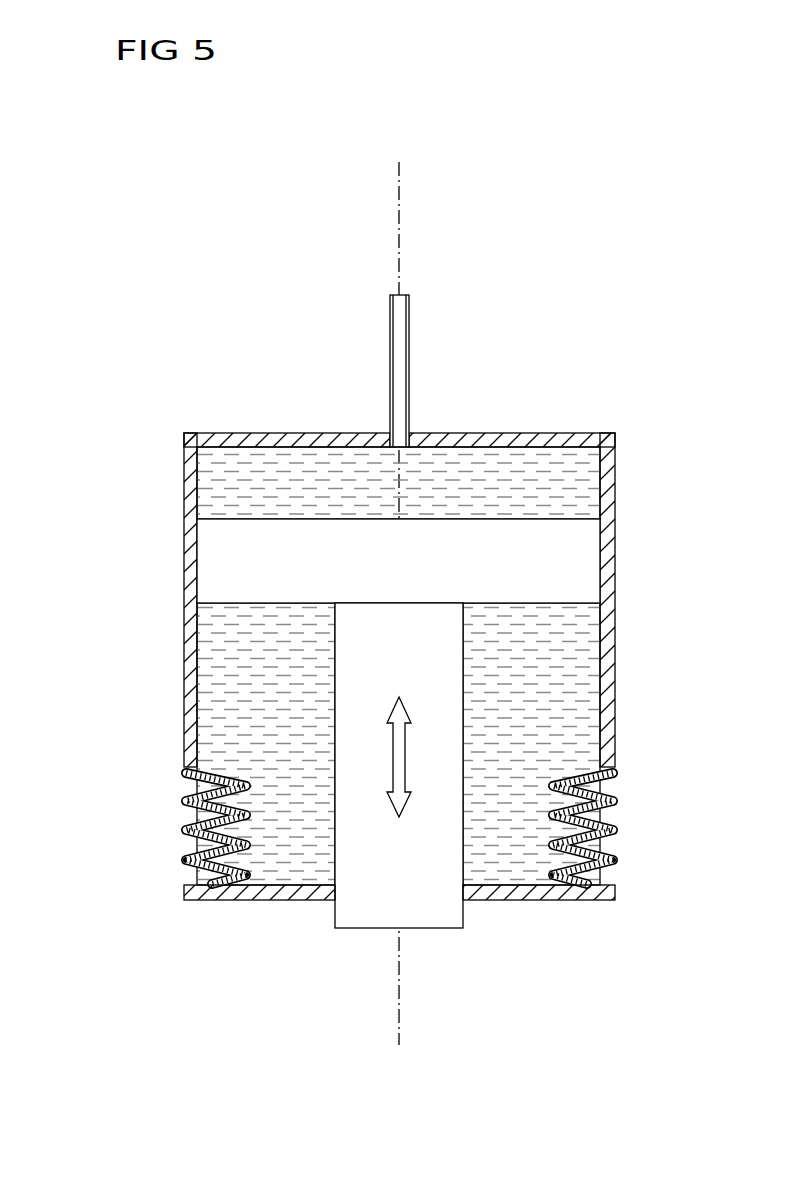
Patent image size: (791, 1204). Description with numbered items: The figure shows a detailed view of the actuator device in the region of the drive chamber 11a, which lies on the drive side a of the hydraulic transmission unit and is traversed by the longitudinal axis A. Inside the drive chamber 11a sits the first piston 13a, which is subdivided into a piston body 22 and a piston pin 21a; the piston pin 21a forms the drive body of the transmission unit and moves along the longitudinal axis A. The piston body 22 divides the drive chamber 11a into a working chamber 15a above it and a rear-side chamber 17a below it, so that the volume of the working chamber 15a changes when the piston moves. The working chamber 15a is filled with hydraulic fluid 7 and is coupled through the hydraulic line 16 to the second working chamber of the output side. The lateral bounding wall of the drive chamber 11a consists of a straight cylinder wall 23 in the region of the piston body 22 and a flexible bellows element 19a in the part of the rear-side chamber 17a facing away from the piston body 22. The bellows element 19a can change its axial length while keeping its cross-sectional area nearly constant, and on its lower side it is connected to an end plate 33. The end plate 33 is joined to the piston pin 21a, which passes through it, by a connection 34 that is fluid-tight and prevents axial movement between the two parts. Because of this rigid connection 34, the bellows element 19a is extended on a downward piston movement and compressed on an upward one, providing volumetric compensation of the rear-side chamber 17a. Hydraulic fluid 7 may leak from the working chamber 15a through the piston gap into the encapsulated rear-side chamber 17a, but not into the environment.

The drive chamber 11a is at (245, 343).
The longitudinal axis A is at (399, 167).
The hydraulic line 16 is at (404, 352).
The working chamber 15a is at (582, 468).
The hydraulic fluid 7 is at (218, 492).
The first piston 13a is at (582, 567).
The piston body 22 is at (218, 567).
The cylinder wall 23 is at (607, 663).
The rear-side chamber 17a is at (321, 750).
The bellows element 19a is at (363, 828).
The piston pin 21a is at (427, 915).
The end plate 33 is at (590, 894).
The connection 34 is at (328, 902).
The drive side a is at (592, 960).